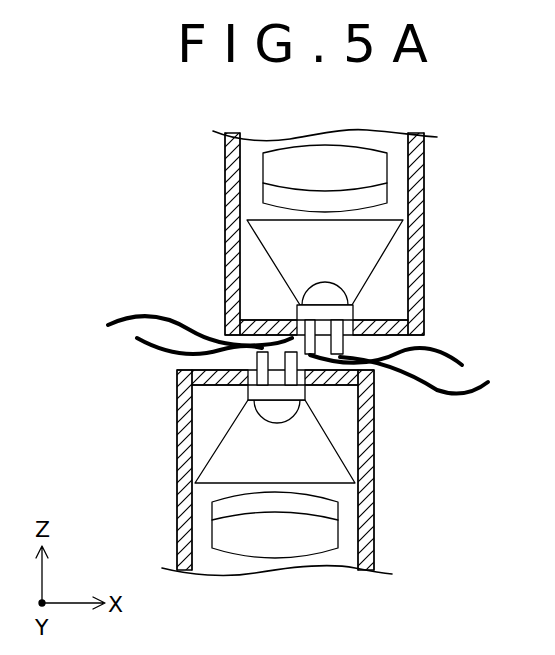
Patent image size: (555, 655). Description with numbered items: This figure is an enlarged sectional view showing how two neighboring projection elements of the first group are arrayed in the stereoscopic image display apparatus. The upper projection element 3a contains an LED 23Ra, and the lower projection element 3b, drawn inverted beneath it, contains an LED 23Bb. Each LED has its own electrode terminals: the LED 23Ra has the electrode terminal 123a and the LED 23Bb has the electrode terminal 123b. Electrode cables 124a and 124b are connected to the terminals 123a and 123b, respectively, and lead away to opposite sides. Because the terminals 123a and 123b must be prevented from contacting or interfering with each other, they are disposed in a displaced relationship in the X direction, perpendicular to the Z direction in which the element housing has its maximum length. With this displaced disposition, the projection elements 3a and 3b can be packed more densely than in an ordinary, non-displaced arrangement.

The projection element 3a is at (427, 230).
The projection element 3b is at (380, 478).
The LED 23Ra is at (333, 290).
The LED 23Bb is at (278, 413).
The electrode terminal 123a is at (300, 330).
The electrode terminal 123b is at (262, 365).
The electrode cable 124a is at (470, 388).
The electrode cable 124b is at (132, 315).